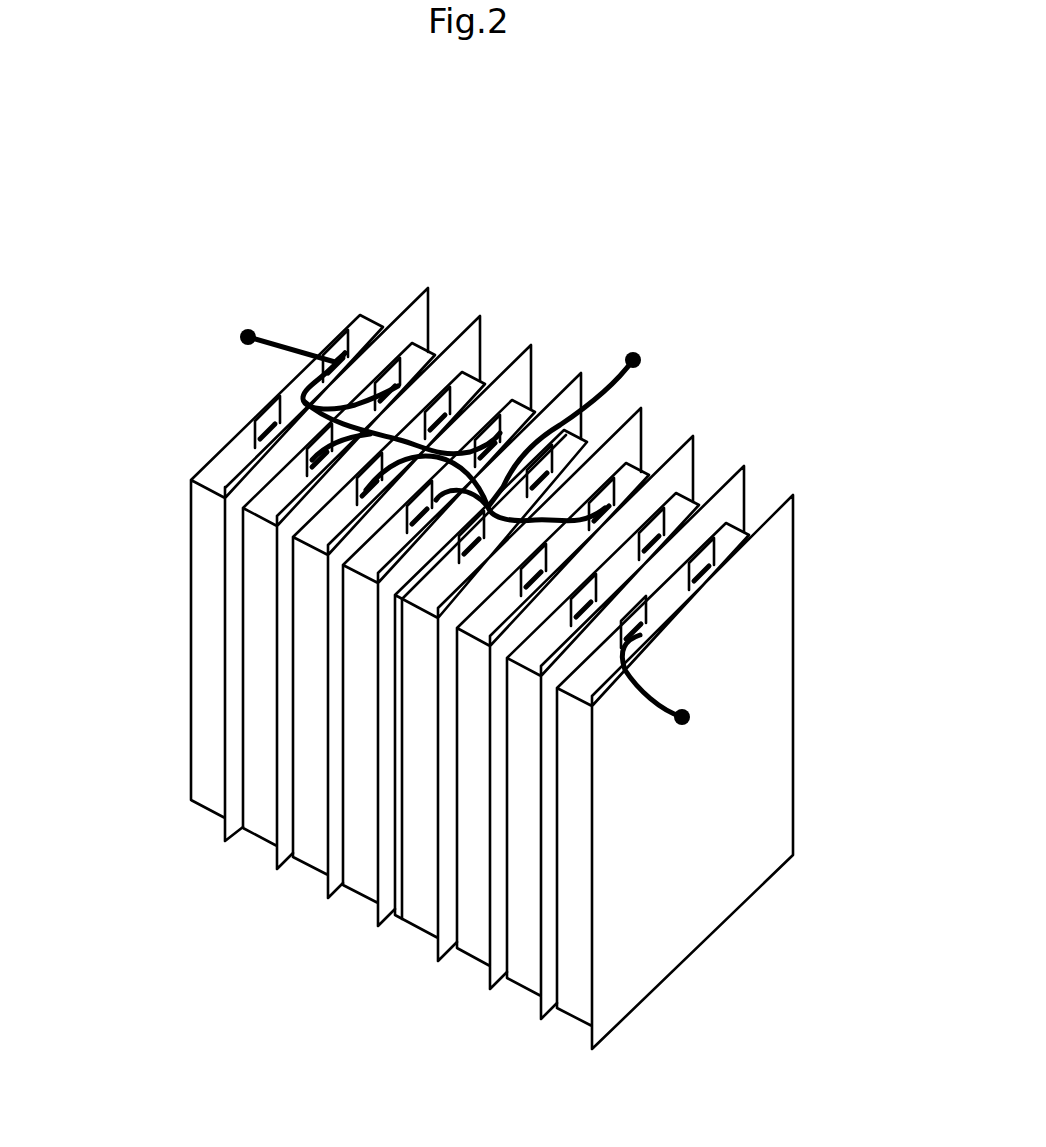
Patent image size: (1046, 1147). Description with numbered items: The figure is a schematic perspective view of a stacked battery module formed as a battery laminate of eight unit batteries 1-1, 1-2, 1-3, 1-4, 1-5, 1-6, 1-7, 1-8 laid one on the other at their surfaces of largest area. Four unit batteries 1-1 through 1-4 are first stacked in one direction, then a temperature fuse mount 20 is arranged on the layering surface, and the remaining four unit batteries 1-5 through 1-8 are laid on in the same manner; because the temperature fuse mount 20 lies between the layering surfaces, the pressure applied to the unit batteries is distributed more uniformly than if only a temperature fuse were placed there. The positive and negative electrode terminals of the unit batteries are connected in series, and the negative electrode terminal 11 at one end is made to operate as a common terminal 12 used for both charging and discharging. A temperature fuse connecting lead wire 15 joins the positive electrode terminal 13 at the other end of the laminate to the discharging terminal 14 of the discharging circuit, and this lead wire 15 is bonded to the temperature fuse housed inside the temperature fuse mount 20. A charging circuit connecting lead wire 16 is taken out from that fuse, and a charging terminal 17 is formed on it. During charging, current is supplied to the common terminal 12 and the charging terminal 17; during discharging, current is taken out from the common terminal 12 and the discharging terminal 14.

The unit battery 1-1 is at (258, 523).
The unit battery 1-2 is at (265, 820).
The unit battery 1-3 is at (318, 852).
The unit battery 1-4 is at (370, 862).
The unit battery 1-5 is at (409, 714).
The unit battery 1-6 is at (473, 932).
The unit battery 1-7 is at (525, 950).
The unit battery 1-8 is at (580, 972).
The negative electrode terminal 11 is at (640, 637).
The common terminal 12 is at (692, 720).
The positive electrode terminal 13 is at (335, 340).
The discharging terminal 14 is at (241, 342).
The temperature fuse connecting lead wire 15 is at (257, 460).
The charging circuit connecting lead wire 16 is at (557, 432).
The charging terminal 17 is at (641, 358).
The temperature fuse mount 20 is at (396, 797).